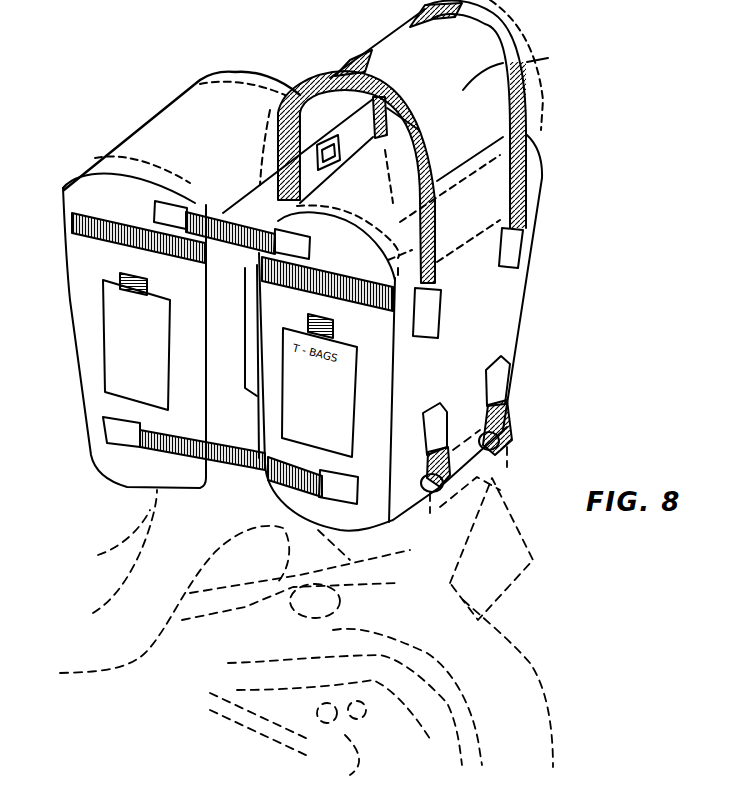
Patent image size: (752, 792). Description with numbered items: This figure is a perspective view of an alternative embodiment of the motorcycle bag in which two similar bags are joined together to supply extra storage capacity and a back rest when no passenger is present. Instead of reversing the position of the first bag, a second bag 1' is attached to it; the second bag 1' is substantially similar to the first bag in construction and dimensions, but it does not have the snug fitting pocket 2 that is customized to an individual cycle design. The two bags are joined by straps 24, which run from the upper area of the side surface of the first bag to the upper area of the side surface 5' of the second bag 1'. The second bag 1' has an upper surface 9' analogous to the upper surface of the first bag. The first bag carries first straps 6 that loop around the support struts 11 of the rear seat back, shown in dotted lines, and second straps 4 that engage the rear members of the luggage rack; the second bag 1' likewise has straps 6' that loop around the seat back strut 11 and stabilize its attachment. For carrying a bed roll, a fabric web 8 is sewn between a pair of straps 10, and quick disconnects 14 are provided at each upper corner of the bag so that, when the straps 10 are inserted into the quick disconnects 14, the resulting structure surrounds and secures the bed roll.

The second bag 1' is at (109, 77).
The pocket 2 is at (247, 363).
The second straps 4 is at (507, 422).
The side surface 5' is at (170, 280).
The first straps 6 is at (277, 496).
The straps 6' is at (180, 466).
The fabric web 8 is at (527, 60).
The upper surface 9' is at (379, 142).
The straps 10 is at (527, 97).
The support struts 11 is at (300, 562).
The quick disconnects 14 is at (530, 238).
The straps 24 is at (213, 210).